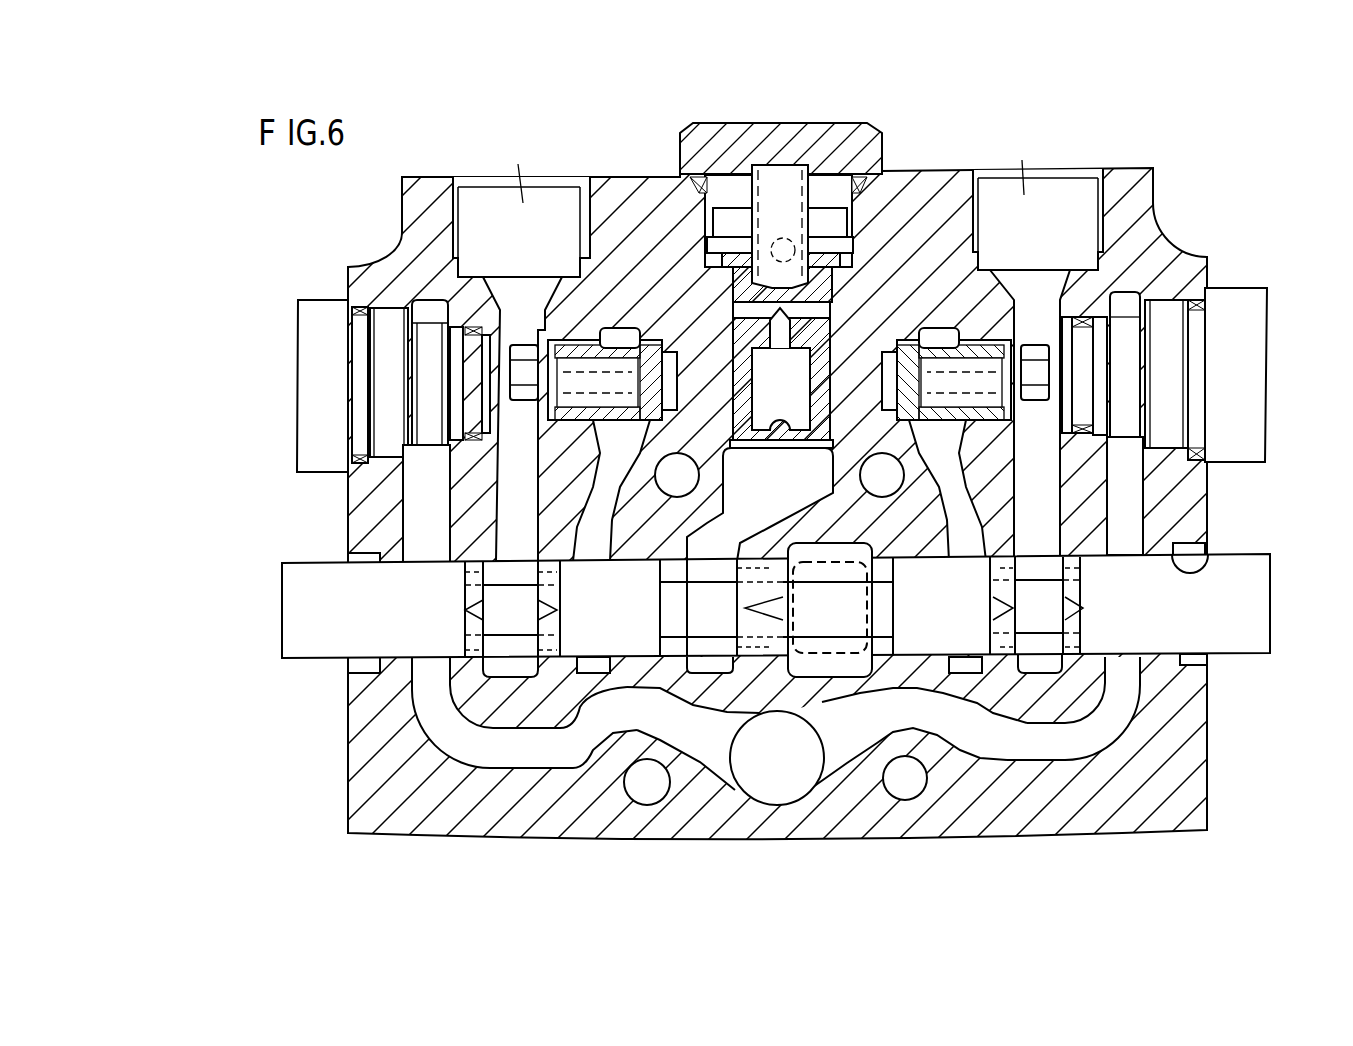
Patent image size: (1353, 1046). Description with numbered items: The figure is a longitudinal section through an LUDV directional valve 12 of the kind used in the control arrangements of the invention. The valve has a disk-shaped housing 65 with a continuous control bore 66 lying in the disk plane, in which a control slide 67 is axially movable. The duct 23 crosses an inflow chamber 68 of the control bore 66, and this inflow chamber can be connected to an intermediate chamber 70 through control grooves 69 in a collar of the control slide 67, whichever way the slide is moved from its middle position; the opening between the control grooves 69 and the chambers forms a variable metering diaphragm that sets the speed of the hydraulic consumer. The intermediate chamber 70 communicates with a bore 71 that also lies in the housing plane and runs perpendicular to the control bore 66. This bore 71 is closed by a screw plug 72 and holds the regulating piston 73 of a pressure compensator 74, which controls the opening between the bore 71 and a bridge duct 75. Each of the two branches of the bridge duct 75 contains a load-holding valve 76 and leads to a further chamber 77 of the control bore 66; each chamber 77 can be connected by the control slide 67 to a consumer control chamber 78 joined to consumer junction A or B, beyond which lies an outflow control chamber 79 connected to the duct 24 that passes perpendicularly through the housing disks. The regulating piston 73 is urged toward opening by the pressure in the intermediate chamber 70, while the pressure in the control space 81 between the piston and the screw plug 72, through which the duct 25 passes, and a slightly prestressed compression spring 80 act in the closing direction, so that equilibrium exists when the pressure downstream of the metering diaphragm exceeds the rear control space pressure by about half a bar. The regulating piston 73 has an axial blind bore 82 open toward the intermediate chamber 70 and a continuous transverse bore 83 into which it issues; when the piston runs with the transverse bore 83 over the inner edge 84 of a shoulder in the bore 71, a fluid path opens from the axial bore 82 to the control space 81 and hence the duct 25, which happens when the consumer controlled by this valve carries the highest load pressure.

The LUDV directional valve 12 is at (788, 456).
The duct 23 is at (838, 648).
The duct 24 is at (808, 747).
The duct 25 is at (930, 160).
The housing 65 is at (387, 775).
The control bore 66 is at (1213, 553).
The control slide 67 is at (1253, 553).
The inflow chamber 68 is at (820, 545).
The control grooves 69 is at (708, 603).
The intermediate chamber 70 is at (693, 663).
The bore 71 is at (733, 327).
The screw plug 72 is at (792, 165).
The regulating piston 73 is at (818, 340).
The pressure compensator 74 is at (887, 257).
The bridge duct 75 is at (688, 392).
The load-holding valve 76 is at (623, 343).
The chamber 77 is at (592, 668).
The consumer control chamber 78 is at (457, 703).
The outflow control chamber 79 is at (360, 700).
The compression spring 80 is at (875, 157).
The control space 81 is at (805, 188).
The axial blind bore 82 is at (792, 389).
The transverse bore 83 is at (825, 312).
The inner edge 84 is at (850, 240).